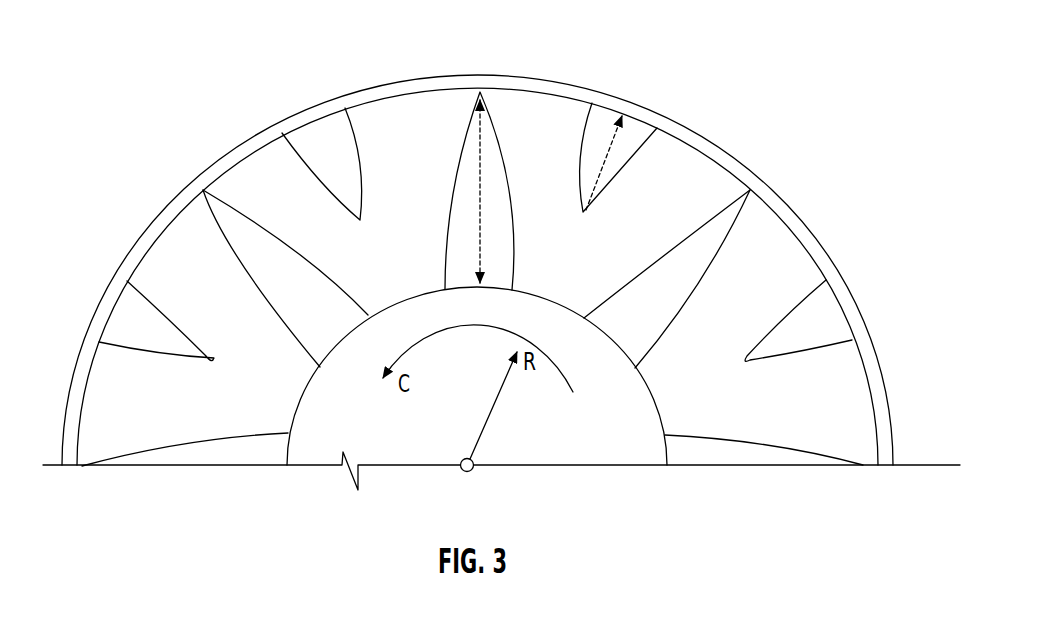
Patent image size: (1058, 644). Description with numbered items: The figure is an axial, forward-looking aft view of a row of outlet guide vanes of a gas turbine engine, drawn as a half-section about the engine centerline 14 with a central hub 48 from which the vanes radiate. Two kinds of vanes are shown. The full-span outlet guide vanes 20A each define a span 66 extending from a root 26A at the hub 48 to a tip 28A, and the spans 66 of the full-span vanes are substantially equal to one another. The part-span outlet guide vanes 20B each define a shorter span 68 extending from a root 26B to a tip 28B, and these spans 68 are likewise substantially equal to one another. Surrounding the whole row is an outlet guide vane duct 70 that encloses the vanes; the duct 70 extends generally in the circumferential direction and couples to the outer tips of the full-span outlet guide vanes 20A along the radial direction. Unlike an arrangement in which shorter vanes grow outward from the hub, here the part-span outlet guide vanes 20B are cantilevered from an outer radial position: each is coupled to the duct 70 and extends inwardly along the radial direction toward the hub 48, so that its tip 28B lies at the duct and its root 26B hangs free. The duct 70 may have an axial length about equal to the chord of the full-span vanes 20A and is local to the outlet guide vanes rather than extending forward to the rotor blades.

The axis of rotation 14 is at (468, 472).
The full-span outlet guide vane 20A is at (453, 183).
The part-span outlet guide vane 20B is at (340, 163).
The root 26A is at (448, 278).
The root 26B is at (603, 128).
The tip 28A is at (488, 94).
The tip 28B is at (590, 215).
The hub 48 is at (555, 302).
The span 66 is at (487, 187).
The span 68 is at (610, 150).
The outlet guide vane duct 70 is at (696, 133).